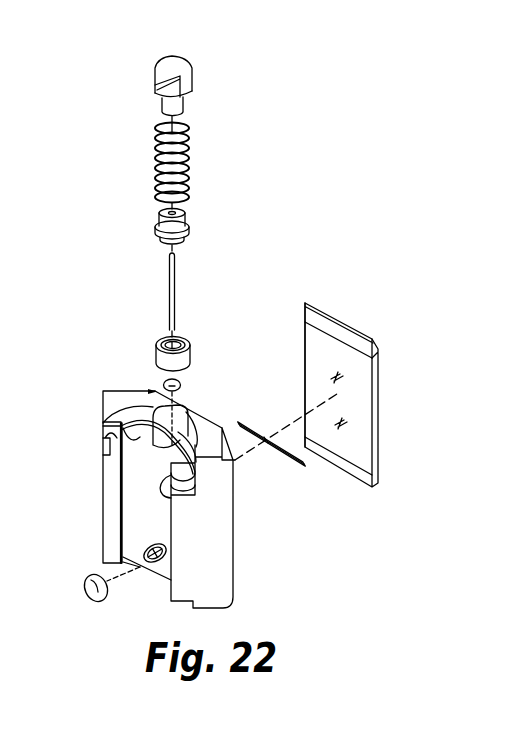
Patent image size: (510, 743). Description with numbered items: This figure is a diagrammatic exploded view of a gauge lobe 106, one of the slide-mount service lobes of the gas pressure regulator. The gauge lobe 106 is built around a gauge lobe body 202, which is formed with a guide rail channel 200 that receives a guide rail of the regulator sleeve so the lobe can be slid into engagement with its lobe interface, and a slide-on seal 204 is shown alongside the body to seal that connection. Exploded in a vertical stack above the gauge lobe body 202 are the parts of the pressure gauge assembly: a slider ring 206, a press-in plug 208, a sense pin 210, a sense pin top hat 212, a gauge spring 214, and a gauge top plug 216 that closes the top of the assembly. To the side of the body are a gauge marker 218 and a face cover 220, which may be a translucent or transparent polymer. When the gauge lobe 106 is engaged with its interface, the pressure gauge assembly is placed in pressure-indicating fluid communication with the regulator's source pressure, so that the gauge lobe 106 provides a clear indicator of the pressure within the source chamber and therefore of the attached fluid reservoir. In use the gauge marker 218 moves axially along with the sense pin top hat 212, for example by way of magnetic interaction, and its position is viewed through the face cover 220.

The gauge lobe 106 is at (321, 118).
The guide rail channel 200 is at (195, 471).
The gauge lobe body 202 is at (233, 555).
The slide-on seal 204 is at (85, 577).
The slider ring 206 is at (164, 386).
The press-in plug 208 is at (190, 352).
The sense pin 210 is at (178, 290).
The sense pin top hat 212 is at (192, 228).
The gauge spring 214 is at (190, 160).
The gauge top plug 216 is at (193, 82).
The gauge marker 218 is at (287, 460).
The face cover 220 is at (342, 320).